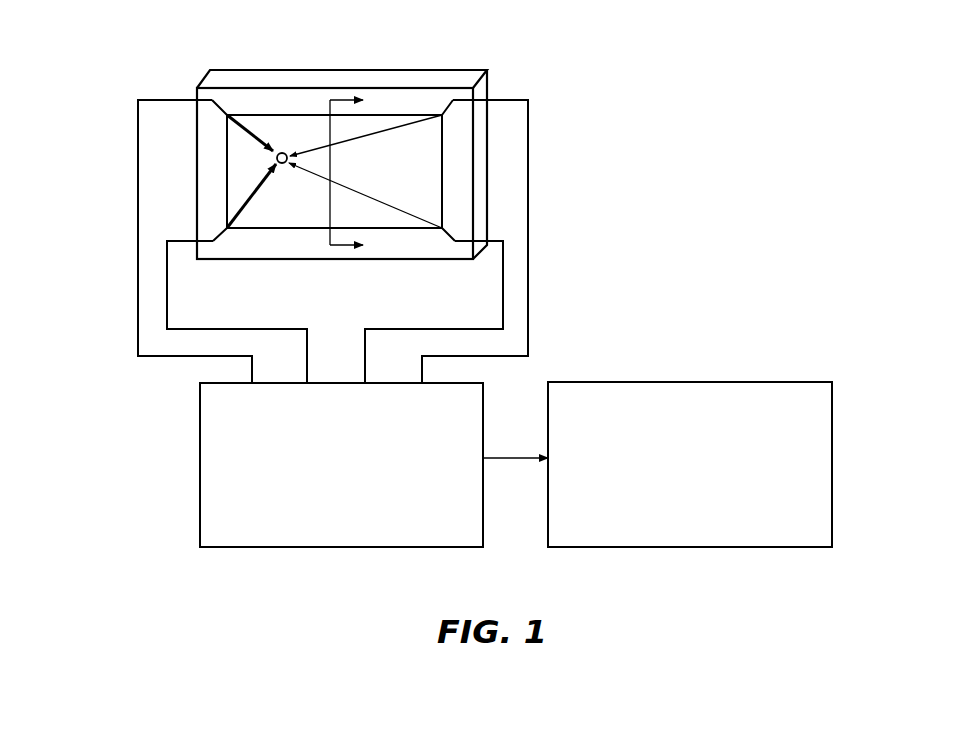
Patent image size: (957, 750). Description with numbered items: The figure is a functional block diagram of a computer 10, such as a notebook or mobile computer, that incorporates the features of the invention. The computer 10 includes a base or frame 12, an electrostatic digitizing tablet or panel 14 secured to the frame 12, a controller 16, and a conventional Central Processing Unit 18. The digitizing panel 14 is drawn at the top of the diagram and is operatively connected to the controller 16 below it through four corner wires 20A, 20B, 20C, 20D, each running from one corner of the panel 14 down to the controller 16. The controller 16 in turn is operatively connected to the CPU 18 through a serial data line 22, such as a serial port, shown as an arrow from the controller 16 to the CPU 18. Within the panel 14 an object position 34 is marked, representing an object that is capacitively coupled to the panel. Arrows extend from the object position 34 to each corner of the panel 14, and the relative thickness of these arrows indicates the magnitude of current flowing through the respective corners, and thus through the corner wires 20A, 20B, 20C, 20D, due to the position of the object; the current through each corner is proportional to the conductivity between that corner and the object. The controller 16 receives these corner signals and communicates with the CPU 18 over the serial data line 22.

The computer 10 is at (690, 195).
The frame 12 is at (295, 78).
The electrostatic digitizing panel 14 is at (292, 205).
The controller 16 is at (265, 548).
The Central Processing Unit 18 is at (740, 548).
The corner wire 20A is at (167, 273).
The corner wire 20B is at (138, 128).
The corner wire 20C is at (528, 120).
The corner wire 20D is at (503, 268).
The serial data line 22 is at (503, 465).
The object position 34 is at (280, 151).